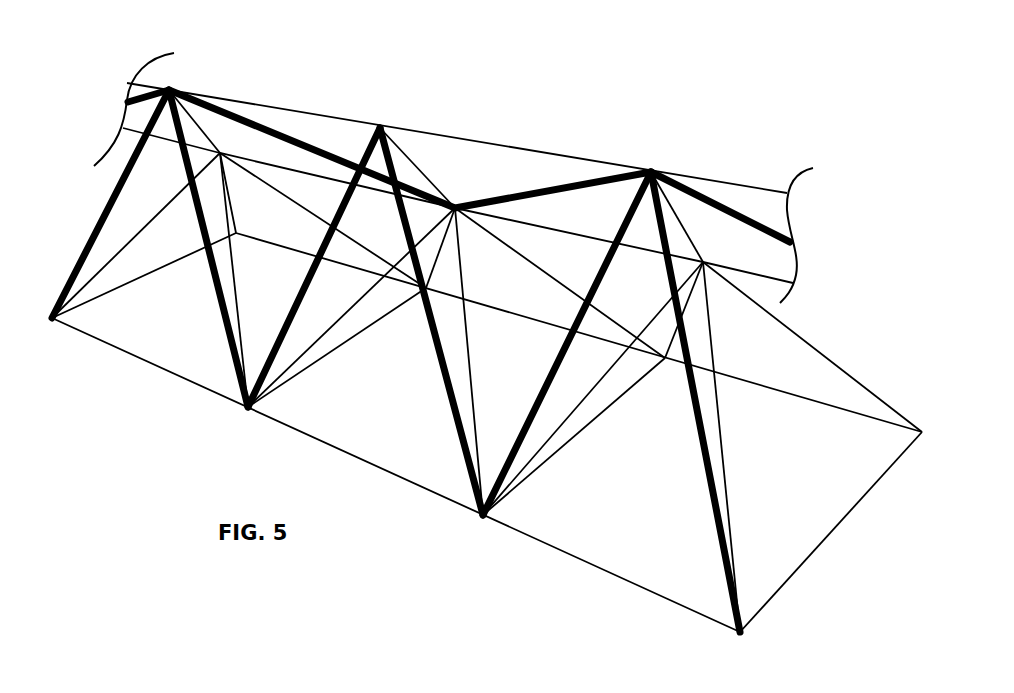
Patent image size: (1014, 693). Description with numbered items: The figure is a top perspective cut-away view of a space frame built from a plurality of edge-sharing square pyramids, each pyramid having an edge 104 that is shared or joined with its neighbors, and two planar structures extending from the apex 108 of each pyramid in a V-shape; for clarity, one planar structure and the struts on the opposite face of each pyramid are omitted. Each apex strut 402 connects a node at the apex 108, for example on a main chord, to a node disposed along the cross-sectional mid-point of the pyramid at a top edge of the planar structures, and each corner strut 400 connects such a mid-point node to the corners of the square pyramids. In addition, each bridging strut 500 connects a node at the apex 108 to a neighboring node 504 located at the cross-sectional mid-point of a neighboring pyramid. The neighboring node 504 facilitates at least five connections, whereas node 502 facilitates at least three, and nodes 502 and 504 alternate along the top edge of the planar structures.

The edge 104 is at (337, 347).
The apex 108 is at (496, 222).
The corner strut 400 is at (97, 230).
The apex strut 402 is at (430, 181).
The bridging strut 500 is at (143, 95).
The node 502 is at (384, 104).
The neighboring node 504 is at (653, 158).